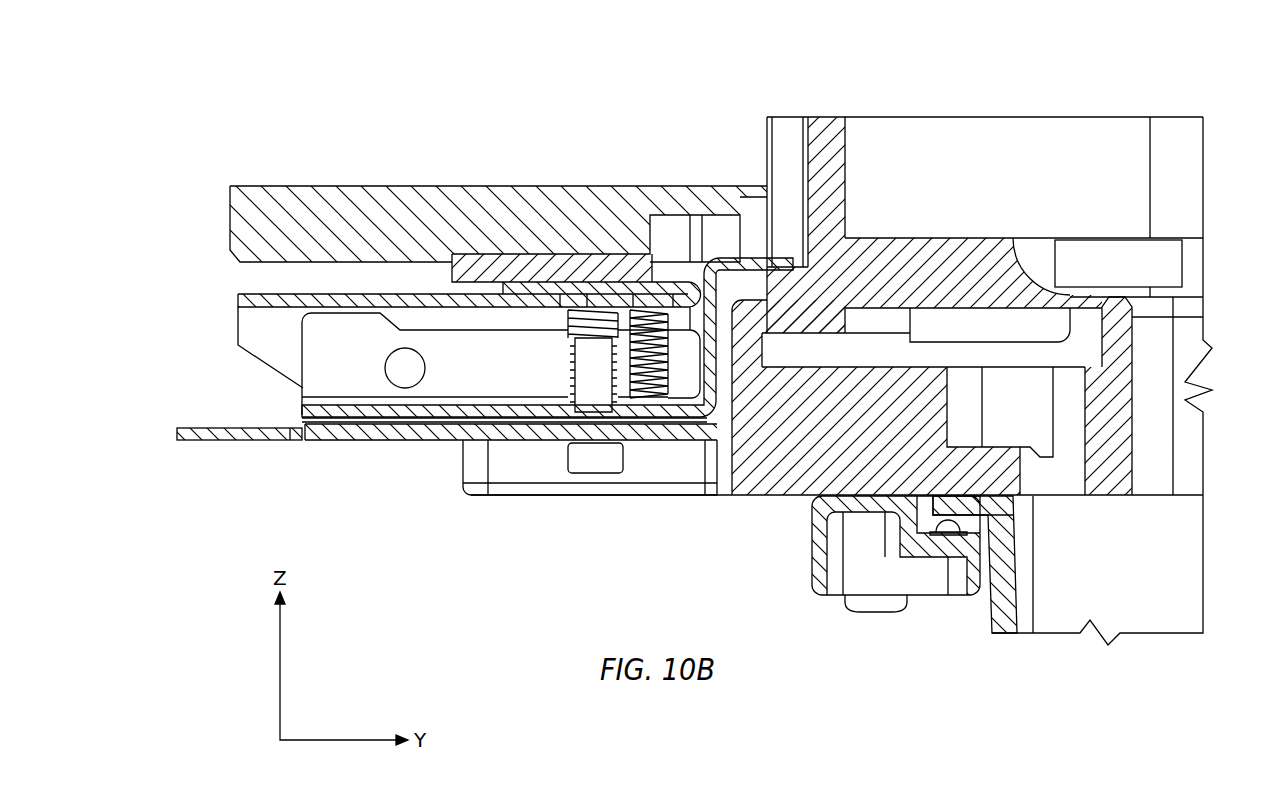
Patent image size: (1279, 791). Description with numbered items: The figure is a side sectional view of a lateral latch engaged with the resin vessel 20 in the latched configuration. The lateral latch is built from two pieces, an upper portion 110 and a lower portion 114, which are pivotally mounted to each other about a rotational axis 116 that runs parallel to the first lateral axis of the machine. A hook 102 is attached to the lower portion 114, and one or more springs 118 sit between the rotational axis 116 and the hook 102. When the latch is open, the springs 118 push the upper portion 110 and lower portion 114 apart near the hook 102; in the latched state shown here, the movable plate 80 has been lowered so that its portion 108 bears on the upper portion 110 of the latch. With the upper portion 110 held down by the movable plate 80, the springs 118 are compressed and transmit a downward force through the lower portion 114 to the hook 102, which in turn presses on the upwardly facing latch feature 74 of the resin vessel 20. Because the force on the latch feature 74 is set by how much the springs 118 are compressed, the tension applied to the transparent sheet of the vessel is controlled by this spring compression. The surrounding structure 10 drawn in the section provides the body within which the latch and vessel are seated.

The housing body 10 is at (1187, 399).
The resin vessel 20 is at (1193, 192).
The latch feature 74 is at (793, 300).
The movable plate 80 is at (445, 206).
The hook 102 is at (778, 258).
The portion of the movable plate 108 is at (543, 262).
The upper portion 110 is at (453, 296).
The lower portion 114 is at (462, 428).
The rotational axis 116 is at (395, 368).
The spring 118 is at (650, 320).